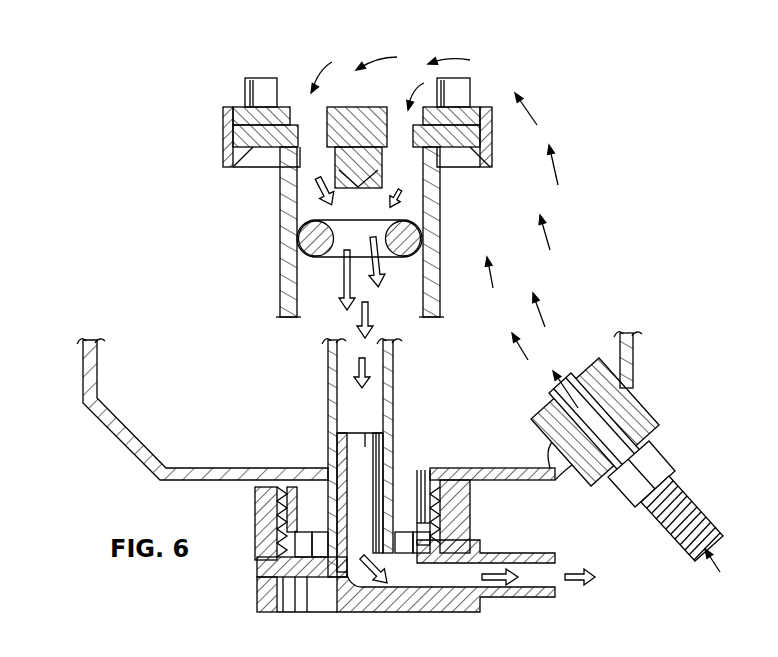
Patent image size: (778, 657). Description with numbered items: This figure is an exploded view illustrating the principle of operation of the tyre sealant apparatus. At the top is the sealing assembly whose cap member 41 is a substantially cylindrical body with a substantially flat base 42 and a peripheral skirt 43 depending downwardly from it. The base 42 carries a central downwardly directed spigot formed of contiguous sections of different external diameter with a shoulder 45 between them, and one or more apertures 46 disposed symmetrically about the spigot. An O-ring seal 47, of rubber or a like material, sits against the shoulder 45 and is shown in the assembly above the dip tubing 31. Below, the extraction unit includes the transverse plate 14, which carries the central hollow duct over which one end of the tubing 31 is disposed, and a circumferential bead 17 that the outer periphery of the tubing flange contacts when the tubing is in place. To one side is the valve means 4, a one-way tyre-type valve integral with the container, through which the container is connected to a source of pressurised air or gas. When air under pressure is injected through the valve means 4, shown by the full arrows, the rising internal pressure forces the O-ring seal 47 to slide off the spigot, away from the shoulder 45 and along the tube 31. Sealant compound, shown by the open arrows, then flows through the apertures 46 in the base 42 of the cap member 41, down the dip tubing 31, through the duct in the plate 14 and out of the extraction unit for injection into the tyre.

The cap member 41 is at (211, 69).
The base 42 is at (262, 118).
The peripheral skirt 43 is at (233, 148).
The shoulder 45 is at (336, 158).
The apertures 46 is at (305, 147).
The O-ring seal 47 is at (297, 240).
The tubing 31 is at (328, 371).
The transverse plate 14 is at (328, 444).
The circumferential bead 17 is at (507, 557).
The valve means 4 is at (627, 425).